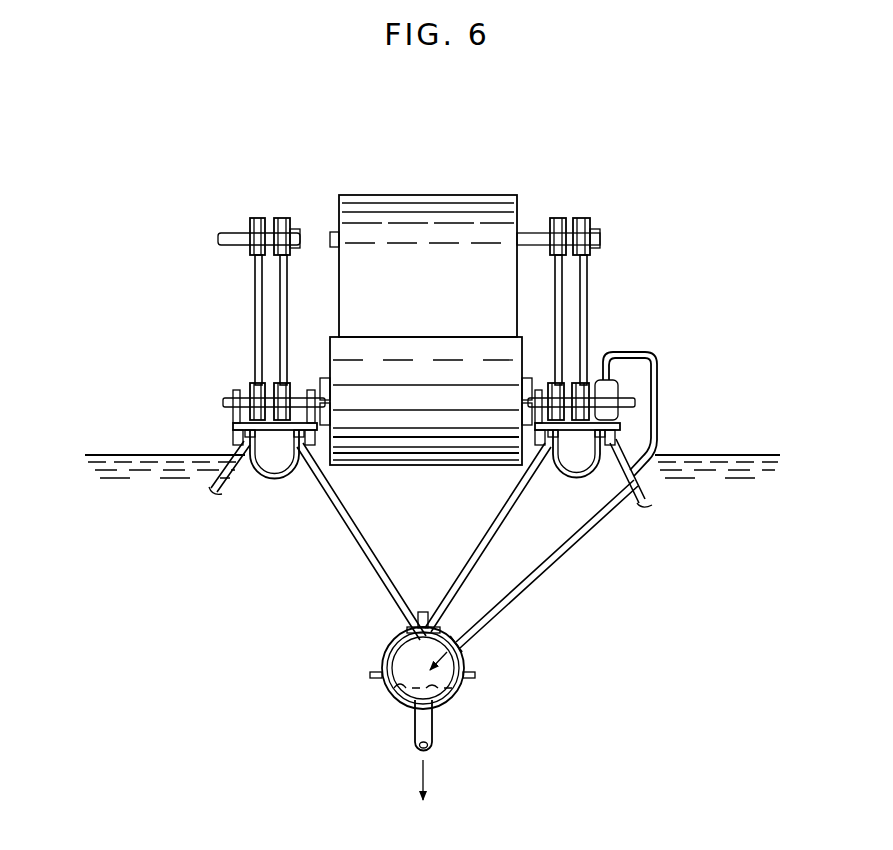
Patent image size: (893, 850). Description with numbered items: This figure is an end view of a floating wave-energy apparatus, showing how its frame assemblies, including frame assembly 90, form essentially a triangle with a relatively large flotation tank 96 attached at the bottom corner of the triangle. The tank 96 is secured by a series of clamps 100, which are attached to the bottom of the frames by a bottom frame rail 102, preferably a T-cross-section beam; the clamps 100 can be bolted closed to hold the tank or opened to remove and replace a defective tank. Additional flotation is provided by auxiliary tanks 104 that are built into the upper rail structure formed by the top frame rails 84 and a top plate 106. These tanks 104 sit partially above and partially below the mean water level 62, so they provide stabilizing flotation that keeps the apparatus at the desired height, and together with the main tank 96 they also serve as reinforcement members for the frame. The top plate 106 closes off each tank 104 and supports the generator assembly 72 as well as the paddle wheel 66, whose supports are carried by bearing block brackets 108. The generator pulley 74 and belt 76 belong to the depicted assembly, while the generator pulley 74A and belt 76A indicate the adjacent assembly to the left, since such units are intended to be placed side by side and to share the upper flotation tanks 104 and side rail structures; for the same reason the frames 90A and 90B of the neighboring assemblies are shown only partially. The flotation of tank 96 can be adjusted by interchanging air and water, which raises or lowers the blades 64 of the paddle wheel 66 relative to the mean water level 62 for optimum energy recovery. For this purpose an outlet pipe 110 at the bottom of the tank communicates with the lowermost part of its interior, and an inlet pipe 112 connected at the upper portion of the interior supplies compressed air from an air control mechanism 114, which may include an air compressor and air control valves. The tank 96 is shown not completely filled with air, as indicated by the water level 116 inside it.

The mean water level 62 is at (125, 454).
The blades 64 is at (442, 420).
The paddle wheel 66 is at (425, 330).
The generator assembly 72 is at (447, 198).
The generator pulley 74 is at (590, 218).
The generator pulley 74A is at (287, 218).
The belt 76 is at (563, 284).
The belt 76A is at (282, 276).
The top frame rail 84 is at (247, 438).
The frame assembly 90 is at (352, 548).
The frame 90A is at (212, 489).
The frame 90B is at (630, 500).
The flotation tank 96 is at (388, 650).
The clamp 100 is at (398, 710).
The bottom frame rail 102 is at (422, 611).
The auxiliary tank 104 is at (271, 480).
The top plate 106 is at (240, 416).
The bearing block bracket 108 is at (316, 392).
The outlet pipe 110 is at (433, 732).
The inlet pipe 112 is at (528, 590).
The air control mechanism 114 is at (608, 388).
The water level 116 is at (393, 682).